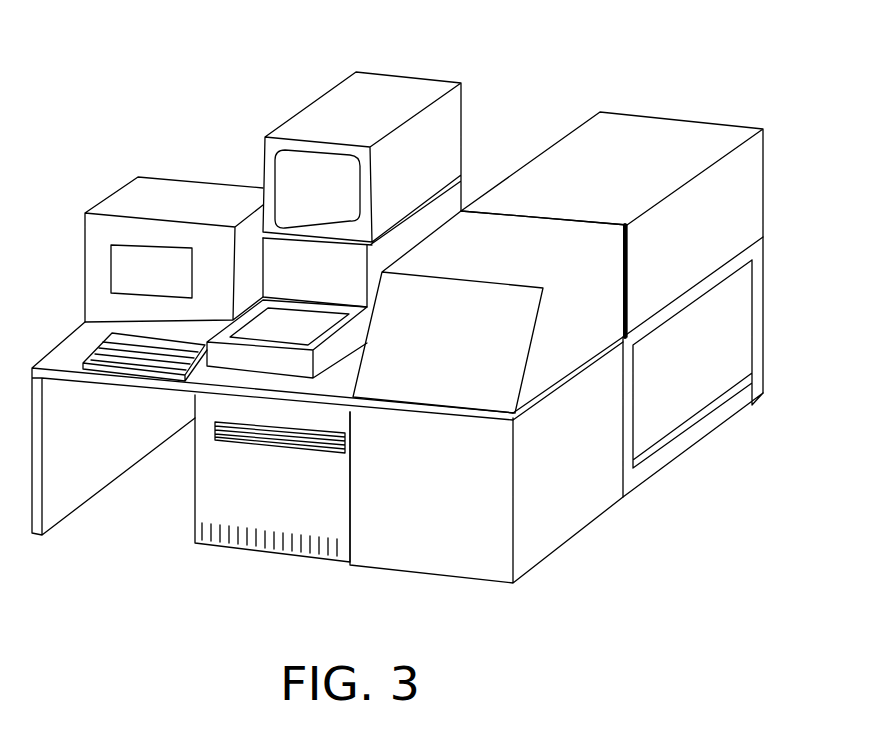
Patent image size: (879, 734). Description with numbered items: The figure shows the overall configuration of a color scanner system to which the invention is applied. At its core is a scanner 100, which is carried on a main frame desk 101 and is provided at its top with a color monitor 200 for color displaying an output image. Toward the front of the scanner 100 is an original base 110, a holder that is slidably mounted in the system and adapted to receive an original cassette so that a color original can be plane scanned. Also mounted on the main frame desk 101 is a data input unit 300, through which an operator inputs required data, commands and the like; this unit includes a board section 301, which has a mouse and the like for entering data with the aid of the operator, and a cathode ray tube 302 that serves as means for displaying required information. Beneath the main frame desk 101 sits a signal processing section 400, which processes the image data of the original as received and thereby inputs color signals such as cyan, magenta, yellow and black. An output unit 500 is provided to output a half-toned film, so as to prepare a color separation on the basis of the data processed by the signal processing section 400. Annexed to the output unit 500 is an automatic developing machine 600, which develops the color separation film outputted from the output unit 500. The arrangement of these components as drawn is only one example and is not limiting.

The scanner 100 is at (470, 186).
The main frame desk 101 is at (53, 348).
The original base 110 is at (320, 327).
The color monitor 200 is at (328, 103).
The data input unit 300 is at (105, 190).
The board section 301 is at (132, 372).
The cathode ray tube 302 is at (125, 263).
The signal processing section 400 is at (188, 494).
The output unit 500 is at (568, 553).
The automatic developing machine 600 is at (695, 438).